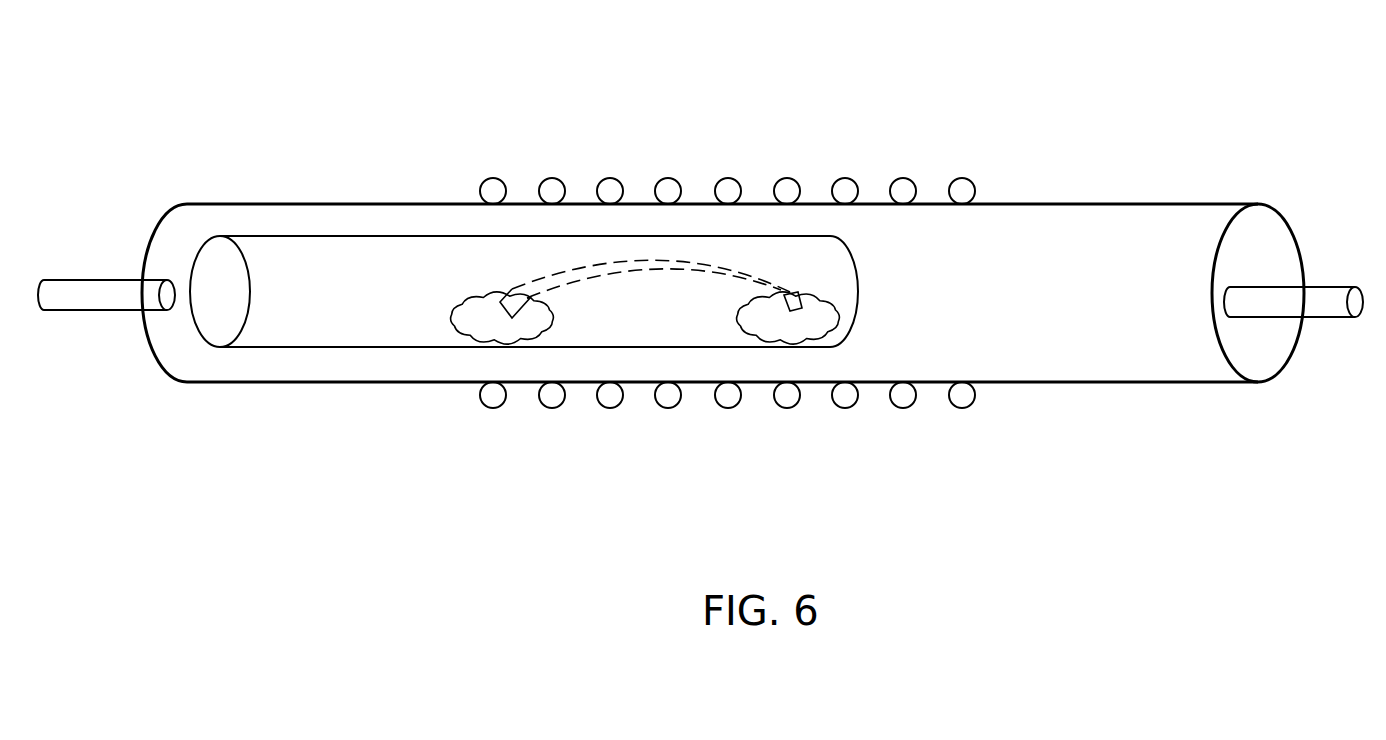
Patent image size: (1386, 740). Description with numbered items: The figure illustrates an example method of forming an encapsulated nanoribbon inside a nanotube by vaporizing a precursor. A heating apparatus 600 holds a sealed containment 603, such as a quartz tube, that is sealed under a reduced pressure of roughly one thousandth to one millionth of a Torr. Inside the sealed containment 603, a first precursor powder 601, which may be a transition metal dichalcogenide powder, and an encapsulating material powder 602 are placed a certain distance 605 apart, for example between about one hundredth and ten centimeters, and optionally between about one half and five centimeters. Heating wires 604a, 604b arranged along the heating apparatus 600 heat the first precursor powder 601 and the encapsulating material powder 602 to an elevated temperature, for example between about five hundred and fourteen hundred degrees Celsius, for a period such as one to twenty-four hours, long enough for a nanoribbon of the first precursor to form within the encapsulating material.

The heating apparatus 600 is at (1180, 212).
The first precursor powder 601 is at (822, 310).
The encapsulating material powder 602 is at (477, 315).
The sealed containment 603 is at (278, 293).
The heating wire 604a is at (980, 177).
The heating wire 604b is at (980, 425).
The distance 605 is at (512, 327).